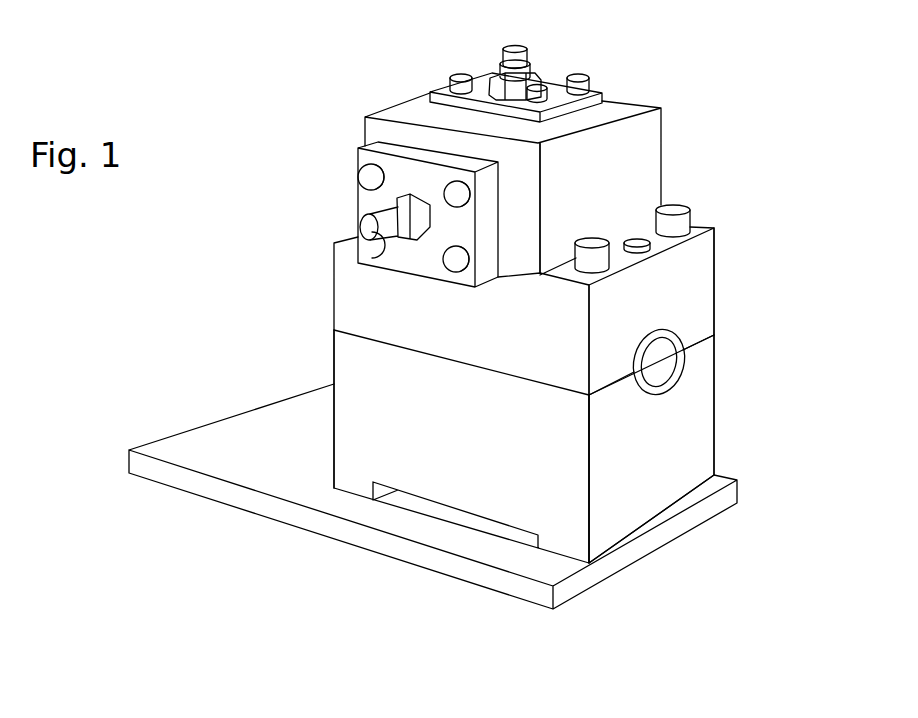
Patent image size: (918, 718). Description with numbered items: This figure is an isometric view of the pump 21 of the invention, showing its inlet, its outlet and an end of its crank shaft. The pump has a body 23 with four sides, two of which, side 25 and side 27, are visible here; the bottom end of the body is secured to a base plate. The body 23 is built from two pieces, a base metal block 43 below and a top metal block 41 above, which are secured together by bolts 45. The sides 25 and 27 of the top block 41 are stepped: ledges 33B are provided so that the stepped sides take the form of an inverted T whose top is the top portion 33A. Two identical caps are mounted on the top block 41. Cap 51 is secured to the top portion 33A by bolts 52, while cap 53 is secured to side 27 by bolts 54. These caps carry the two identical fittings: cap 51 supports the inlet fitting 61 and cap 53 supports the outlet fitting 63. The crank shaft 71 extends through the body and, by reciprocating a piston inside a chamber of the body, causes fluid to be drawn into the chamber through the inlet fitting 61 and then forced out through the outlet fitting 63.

The pump 21 is at (183, 338).
The body 23 is at (317, 167).
The side 25 is at (650, 162).
The side 27 is at (350, 300).
The top portion 33A is at (627, 107).
The ledge 33B is at (532, 388).
The top metal block 41 is at (705, 289).
The base metal block 43 is at (708, 368).
The bolts 45 is at (590, 240).
The cap 51 is at (602, 98).
The bolts 52 is at (590, 80).
The cap 53 is at (363, 150).
The bolts 54 is at (358, 197).
The inlet fitting 61 is at (530, 52).
The outlet fitting 63 is at (362, 218).
The crank shaft 71 is at (658, 360).